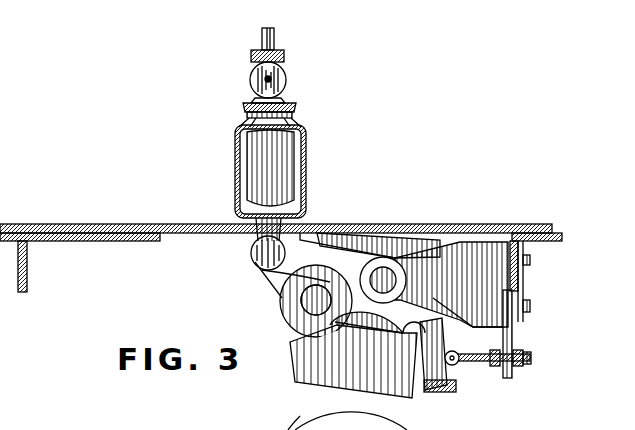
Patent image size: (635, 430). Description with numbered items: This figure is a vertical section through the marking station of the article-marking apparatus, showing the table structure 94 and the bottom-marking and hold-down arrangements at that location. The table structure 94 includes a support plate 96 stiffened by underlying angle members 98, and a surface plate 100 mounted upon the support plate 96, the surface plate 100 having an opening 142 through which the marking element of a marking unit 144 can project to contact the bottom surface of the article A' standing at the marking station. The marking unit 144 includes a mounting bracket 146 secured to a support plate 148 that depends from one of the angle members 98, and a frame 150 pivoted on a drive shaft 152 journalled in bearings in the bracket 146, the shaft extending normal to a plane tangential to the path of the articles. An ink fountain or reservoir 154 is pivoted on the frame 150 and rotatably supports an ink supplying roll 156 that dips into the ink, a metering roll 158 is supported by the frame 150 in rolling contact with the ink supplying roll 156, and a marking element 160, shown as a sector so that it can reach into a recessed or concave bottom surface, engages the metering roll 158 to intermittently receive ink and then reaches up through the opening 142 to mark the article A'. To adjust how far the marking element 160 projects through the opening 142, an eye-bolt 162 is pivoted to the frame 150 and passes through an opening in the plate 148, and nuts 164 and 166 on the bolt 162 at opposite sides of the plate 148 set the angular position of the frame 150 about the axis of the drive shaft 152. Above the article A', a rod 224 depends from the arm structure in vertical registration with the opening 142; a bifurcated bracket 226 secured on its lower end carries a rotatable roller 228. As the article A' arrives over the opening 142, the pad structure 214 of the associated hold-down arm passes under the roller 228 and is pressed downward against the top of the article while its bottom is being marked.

The rod 224 is at (275, 34).
The bifurcated bracket 226 is at (285, 55).
The roller 228 is at (287, 80).
The pad structure 214 is at (296, 107).
The article A' is at (297, 183).
The surface plate 100 is at (84, 226).
The support plate 96 is at (110, 241).
The angle members 98 is at (28, 272).
The table structure 94 is at (482, 178).
The frame 150 is at (357, 240).
The drive shaft 152 is at (388, 276).
The opening 142 is at (250, 246).
The marking element 160 is at (252, 258).
The metering roll 158 is at (290, 317).
The marking unit 144 is at (248, 294).
The ink supplying roll 156 is at (393, 333).
The ink fountain or reservoir 154 is at (418, 396).
The mounting bracket 146 is at (470, 325).
The support plate 148 is at (510, 343).
The eye-bolt 162 is at (478, 362).
The nut 164 is at (497, 368).
The nut 166 is at (523, 362).